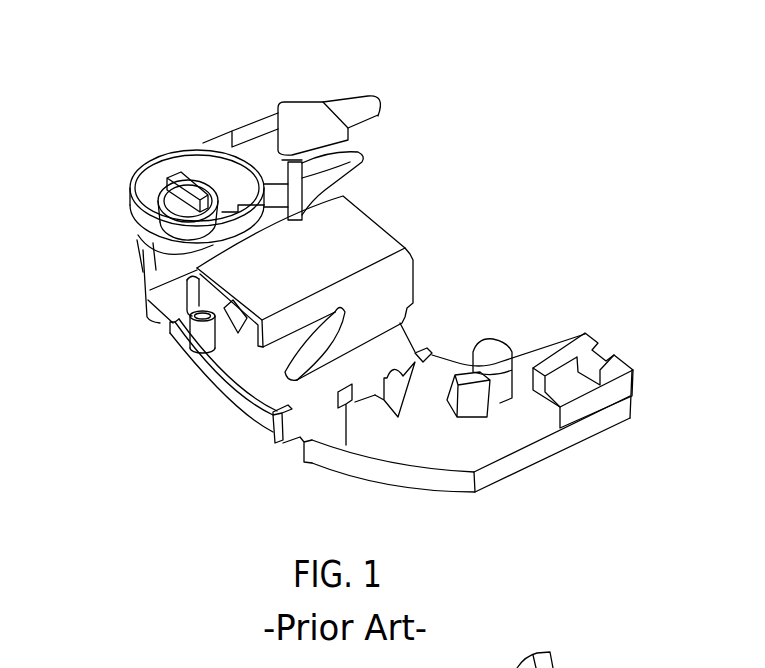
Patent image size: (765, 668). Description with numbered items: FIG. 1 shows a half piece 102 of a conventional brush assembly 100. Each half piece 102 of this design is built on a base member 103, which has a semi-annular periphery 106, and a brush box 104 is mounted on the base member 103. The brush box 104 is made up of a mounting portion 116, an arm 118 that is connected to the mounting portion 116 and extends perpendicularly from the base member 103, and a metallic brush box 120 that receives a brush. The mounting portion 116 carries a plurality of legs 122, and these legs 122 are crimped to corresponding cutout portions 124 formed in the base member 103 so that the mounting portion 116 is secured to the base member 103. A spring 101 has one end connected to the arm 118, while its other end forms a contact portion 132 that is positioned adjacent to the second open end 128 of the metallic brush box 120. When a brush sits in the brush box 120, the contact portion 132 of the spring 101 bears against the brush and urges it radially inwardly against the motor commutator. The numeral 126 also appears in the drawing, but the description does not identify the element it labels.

The brush assembly 100 is at (355, 299).
The spring 101 is at (132, 185).
The arm 118 is at (188, 182).
The semi-annular periphery 106 is at (362, 170).
The metallic brush box 120 is at (365, 232).
The cover assembly 126 is at (340, 281).
The brush box 104 is at (160, 283).
The legs 122 is at (158, 322).
The contact portion 132 is at (192, 334).
The second open end 128 is at (232, 375).
The mounting portion 116 is at (246, 404).
The cutout portions 124 is at (278, 446).
The base member 103 is at (563, 452).
The half piece 102 is at (472, 433).